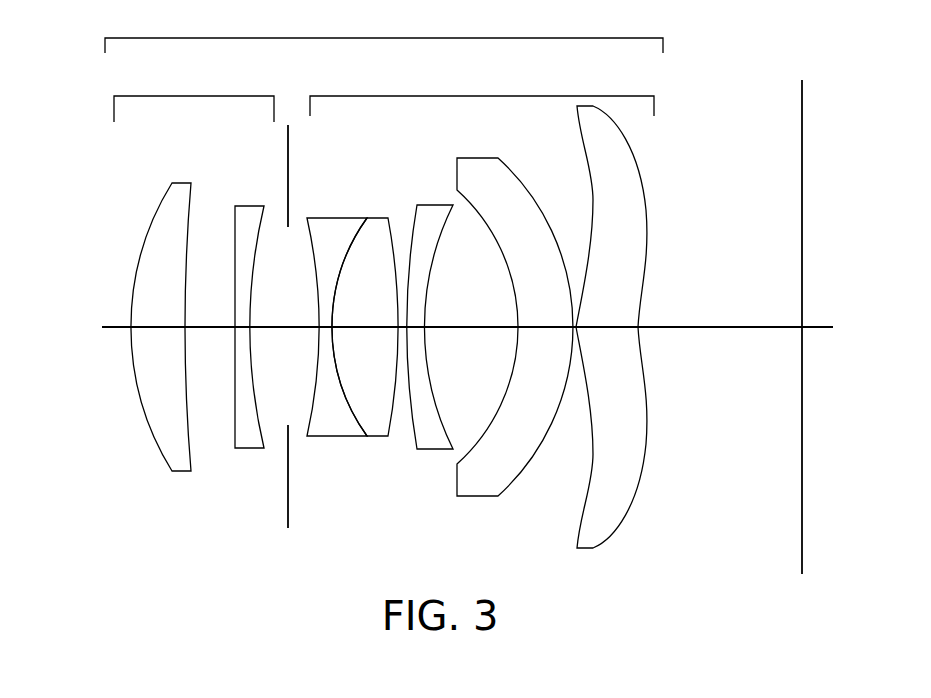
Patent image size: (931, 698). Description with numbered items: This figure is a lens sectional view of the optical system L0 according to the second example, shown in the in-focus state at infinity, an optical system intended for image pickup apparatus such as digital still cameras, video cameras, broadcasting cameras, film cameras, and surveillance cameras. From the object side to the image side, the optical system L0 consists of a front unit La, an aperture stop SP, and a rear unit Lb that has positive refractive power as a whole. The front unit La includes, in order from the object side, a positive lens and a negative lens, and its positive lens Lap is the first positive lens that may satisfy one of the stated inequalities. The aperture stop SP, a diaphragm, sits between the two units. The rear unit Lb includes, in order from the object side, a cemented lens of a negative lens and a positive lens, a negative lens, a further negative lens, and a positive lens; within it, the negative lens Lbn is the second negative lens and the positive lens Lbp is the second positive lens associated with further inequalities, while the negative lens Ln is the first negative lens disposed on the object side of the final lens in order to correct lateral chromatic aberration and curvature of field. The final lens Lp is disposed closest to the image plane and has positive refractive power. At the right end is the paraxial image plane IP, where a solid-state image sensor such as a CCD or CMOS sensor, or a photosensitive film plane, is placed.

The optical system L0 is at (384, 31).
The front unit La is at (194, 95).
The rear unit Lb is at (482, 92).
The aperture stop SP is at (289, 163).
The image plane IP is at (802, 88).
The positive lens Lap is at (175, 471).
The negative lens Lbn is at (331, 436).
The positive lens Lbp is at (376, 436).
The negative lens Ln is at (470, 496).
The final lens Lp is at (578, 545).